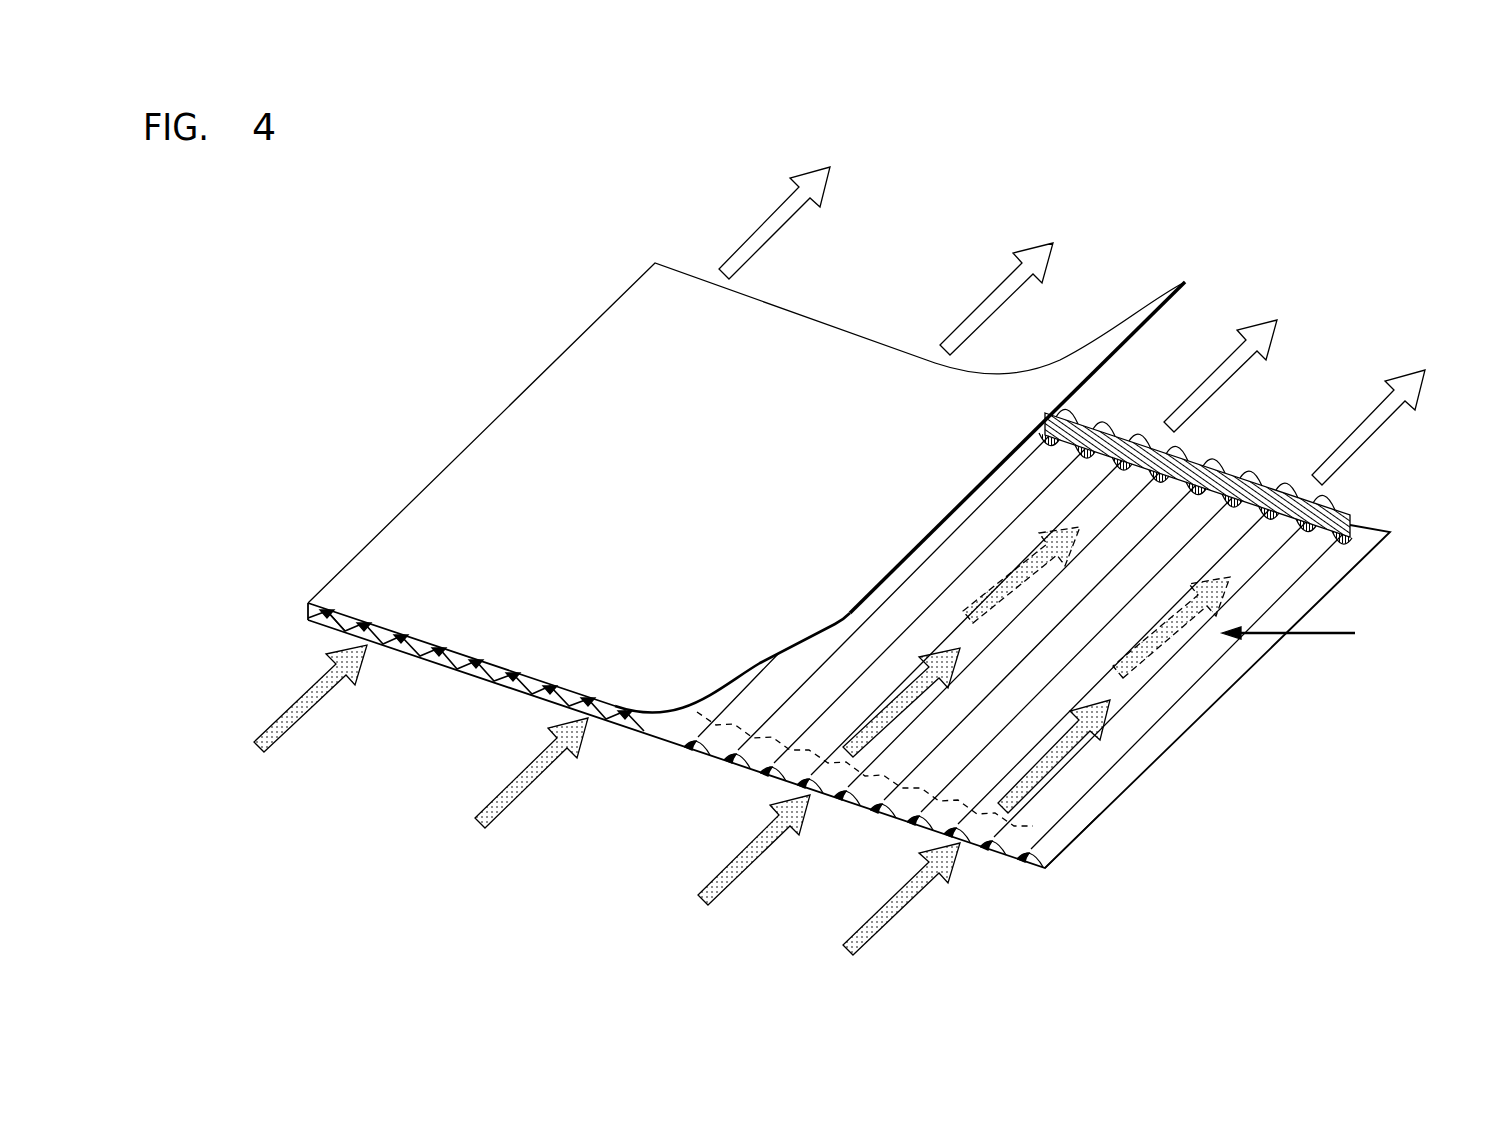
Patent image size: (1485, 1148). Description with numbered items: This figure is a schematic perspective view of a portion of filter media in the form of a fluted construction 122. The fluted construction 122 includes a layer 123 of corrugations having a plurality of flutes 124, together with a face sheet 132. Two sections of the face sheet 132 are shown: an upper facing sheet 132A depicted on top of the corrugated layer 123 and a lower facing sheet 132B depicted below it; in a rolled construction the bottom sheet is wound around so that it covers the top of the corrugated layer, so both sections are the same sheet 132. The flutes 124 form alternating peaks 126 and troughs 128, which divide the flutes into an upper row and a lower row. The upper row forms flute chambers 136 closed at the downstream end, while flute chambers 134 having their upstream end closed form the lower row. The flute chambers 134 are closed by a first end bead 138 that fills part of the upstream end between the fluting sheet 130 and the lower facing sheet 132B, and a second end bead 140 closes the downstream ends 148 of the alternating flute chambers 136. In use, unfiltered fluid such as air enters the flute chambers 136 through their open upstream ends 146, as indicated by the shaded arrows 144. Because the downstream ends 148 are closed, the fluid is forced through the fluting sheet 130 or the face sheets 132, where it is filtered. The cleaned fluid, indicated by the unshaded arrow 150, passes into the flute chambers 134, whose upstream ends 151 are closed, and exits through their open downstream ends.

The fluted construction 122 is at (1083, 215).
The layer of corrugations 123 is at (1313, 635).
The flutes 124 is at (415, 652).
The peaks 126 is at (660, 727).
The troughs 128 is at (797, 787).
The fluting sheet 130 is at (830, 654).
The face sheet 132 is at (717, 488).
The upper facing sheet 132A is at (1143, 313).
The lower facing sheet 132B is at (1044, 870).
The flute chambers having upstream end closed 134 is at (400, 642).
The flute chambers closed at downstream end 136 is at (385, 637).
The first end bead 138 is at (622, 713).
The second end bead 140 is at (1193, 472).
The shaded arrows 144 is at (487, 815).
The upstream ends 146 is at (350, 617).
The downstream ends 148 is at (1057, 453).
The unshaded arrow 150 is at (985, 307).
The upstream ends 151 is at (917, 830).